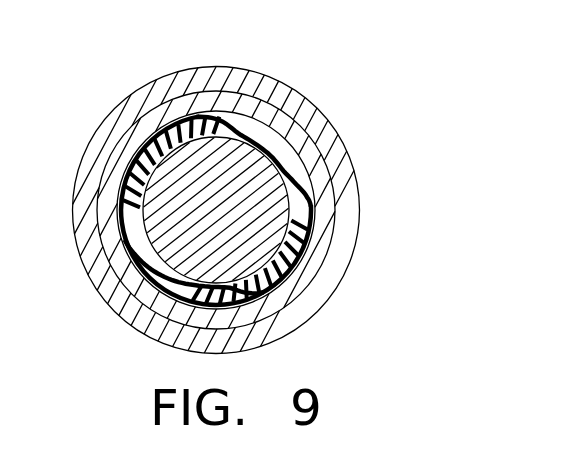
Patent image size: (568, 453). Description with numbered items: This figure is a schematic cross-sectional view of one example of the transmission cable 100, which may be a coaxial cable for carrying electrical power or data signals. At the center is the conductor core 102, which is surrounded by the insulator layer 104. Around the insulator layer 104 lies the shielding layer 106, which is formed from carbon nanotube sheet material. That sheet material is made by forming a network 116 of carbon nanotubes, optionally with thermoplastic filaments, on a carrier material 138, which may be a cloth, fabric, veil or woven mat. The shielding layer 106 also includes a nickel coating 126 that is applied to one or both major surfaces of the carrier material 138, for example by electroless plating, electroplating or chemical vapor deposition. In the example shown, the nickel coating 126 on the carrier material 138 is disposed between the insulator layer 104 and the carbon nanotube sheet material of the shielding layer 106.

The cable 100 is at (350, 55).
The conductor core 102 is at (140, 178).
The insulator layer 104 is at (295, 278).
The shielding layer 106 is at (446, 105).
The network 116 is at (343, 140).
The nickel coating 126 is at (318, 176).
The carrier material 138 is at (322, 186).